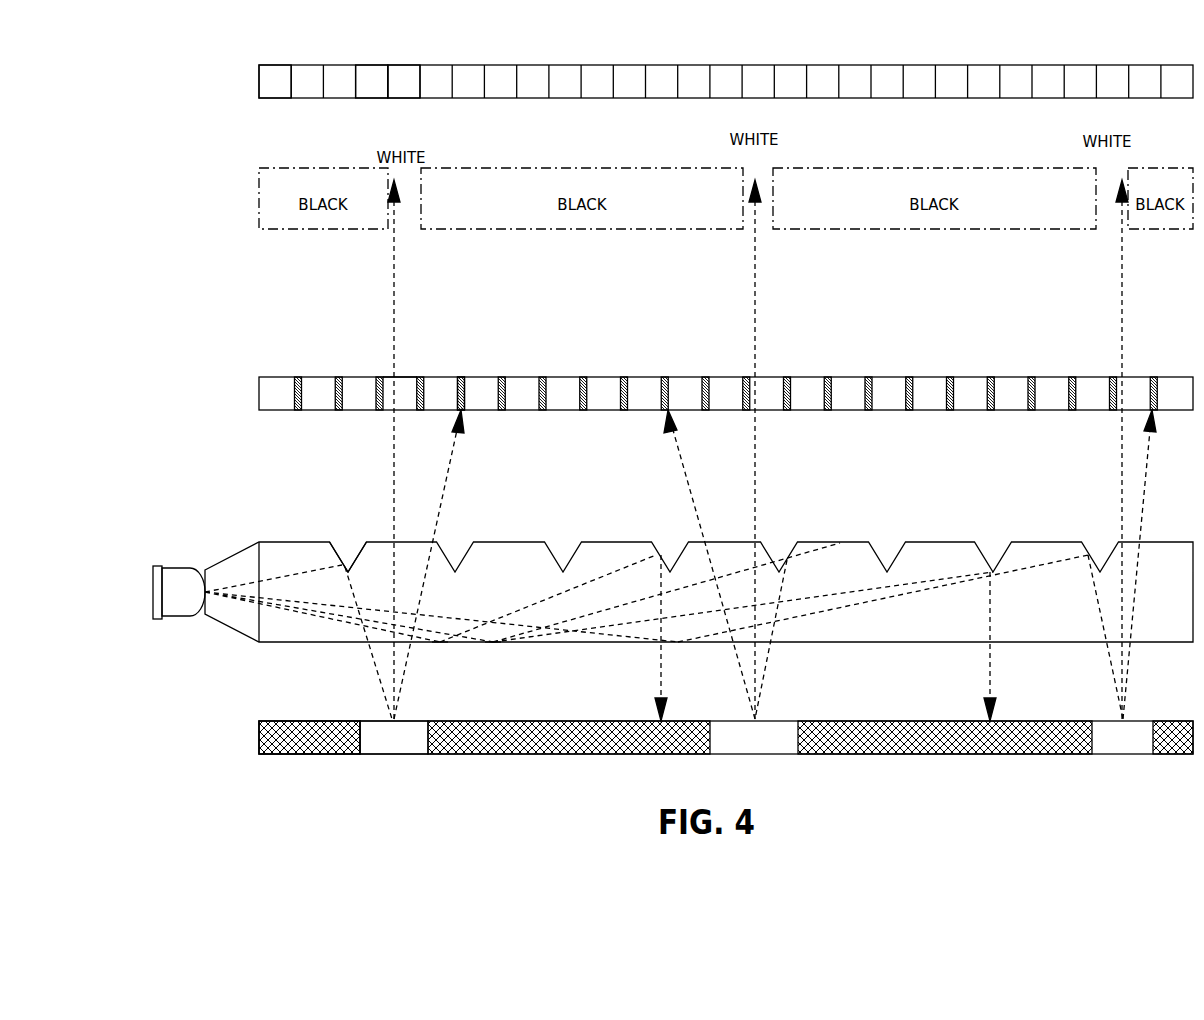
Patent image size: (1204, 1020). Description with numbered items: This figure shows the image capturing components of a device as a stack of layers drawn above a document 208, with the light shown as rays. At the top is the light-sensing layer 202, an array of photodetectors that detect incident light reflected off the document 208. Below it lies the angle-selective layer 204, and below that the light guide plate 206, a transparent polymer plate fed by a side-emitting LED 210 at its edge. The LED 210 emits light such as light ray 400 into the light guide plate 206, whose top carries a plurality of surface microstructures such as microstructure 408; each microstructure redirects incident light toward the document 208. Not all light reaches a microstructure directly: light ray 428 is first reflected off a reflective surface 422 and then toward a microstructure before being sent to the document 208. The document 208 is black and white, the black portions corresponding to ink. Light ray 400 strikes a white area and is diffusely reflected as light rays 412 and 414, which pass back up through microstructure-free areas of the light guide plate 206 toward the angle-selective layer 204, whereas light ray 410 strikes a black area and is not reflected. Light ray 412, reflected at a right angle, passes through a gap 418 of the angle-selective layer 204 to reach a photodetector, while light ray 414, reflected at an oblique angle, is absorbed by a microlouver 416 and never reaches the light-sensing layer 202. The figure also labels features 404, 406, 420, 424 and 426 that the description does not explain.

The light-sensing layer 202 is at (230, 82).
The angle-selective layer 204 is at (238, 391).
The light guide plate 206 is at (228, 526).
The document 208 is at (238, 737).
The side-emitting LED 210 is at (185, 567).
The light ray 400 is at (302, 571).
The transparent portion of detector 404 is at (400, 755).
The opaque portion of detector 406 is at (317, 755).
The microstructure 408 is at (337, 552).
The light ray 410 is at (660, 663).
The light ray 412 is at (393, 450).
The light ray 414 is at (448, 453).
The microlouver 416 is at (462, 377).
The gap 418 is at (412, 377).
The first code cell 420 is at (278, 99).
The reflective surface 422 is at (442, 643).
The code cell 424 is at (371, 99).
The code cell with value 1 426 is at (410, 99).
The light ray 428 is at (493, 643).